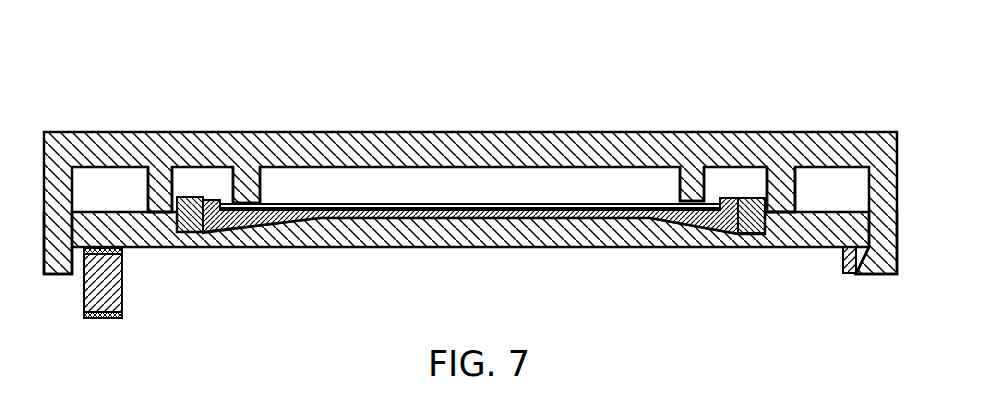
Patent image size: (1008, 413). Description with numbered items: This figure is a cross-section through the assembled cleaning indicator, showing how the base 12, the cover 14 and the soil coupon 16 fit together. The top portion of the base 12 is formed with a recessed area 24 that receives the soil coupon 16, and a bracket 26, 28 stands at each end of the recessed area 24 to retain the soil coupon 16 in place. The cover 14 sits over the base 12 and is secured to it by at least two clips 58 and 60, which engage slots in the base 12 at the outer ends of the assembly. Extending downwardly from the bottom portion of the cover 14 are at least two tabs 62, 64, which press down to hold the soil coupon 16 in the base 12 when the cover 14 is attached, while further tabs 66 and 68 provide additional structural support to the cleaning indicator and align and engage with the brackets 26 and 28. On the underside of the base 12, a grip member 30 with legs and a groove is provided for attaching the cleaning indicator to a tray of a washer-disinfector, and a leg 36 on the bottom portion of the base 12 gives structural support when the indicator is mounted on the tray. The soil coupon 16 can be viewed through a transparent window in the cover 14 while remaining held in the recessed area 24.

The base 12 is at (147, 150).
The cover 14 is at (588, 237).
The soil coupon 16 is at (442, 208).
The recessed area 24 is at (321, 218).
The bracket 26 is at (189, 198).
The bracket 28 is at (750, 200).
The grip member 30 is at (112, 283).
The leg 36 is at (851, 274).
The clip 58 is at (58, 218).
The clip 60 is at (882, 200).
The tab 62 is at (238, 175).
The tab 64 is at (693, 198).
The tab 66 is at (781, 172).
The tab 68 is at (162, 180).